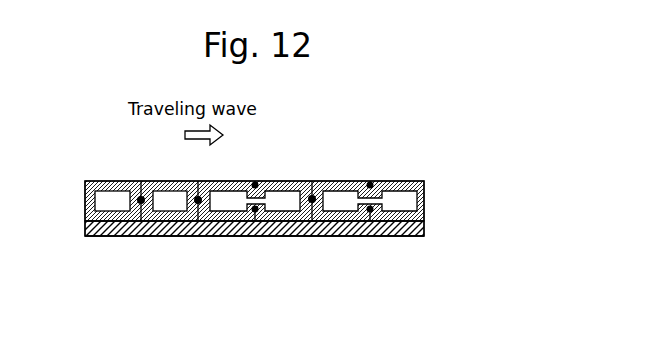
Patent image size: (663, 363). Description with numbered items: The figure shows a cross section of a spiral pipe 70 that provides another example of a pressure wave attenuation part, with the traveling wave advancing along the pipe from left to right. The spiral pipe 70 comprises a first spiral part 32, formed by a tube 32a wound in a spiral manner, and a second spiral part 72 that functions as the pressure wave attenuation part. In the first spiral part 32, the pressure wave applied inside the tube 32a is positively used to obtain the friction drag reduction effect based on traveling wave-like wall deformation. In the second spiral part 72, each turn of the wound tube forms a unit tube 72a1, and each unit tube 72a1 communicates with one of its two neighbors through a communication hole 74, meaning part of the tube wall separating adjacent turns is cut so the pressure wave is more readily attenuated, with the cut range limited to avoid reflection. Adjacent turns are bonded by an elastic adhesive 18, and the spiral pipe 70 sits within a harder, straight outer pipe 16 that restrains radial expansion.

The spiral pipe 70 is at (435, 144).
The first spiral part 32 is at (200, 177).
The second spiral part 72 is at (424, 177).
The communication hole 74 is at (261, 181).
The outer pipe 16 is at (85, 237).
The adhesive 18 is at (293, 238).
The tube 32a is at (170, 237).
The unit tube 72a1 is at (213, 238).